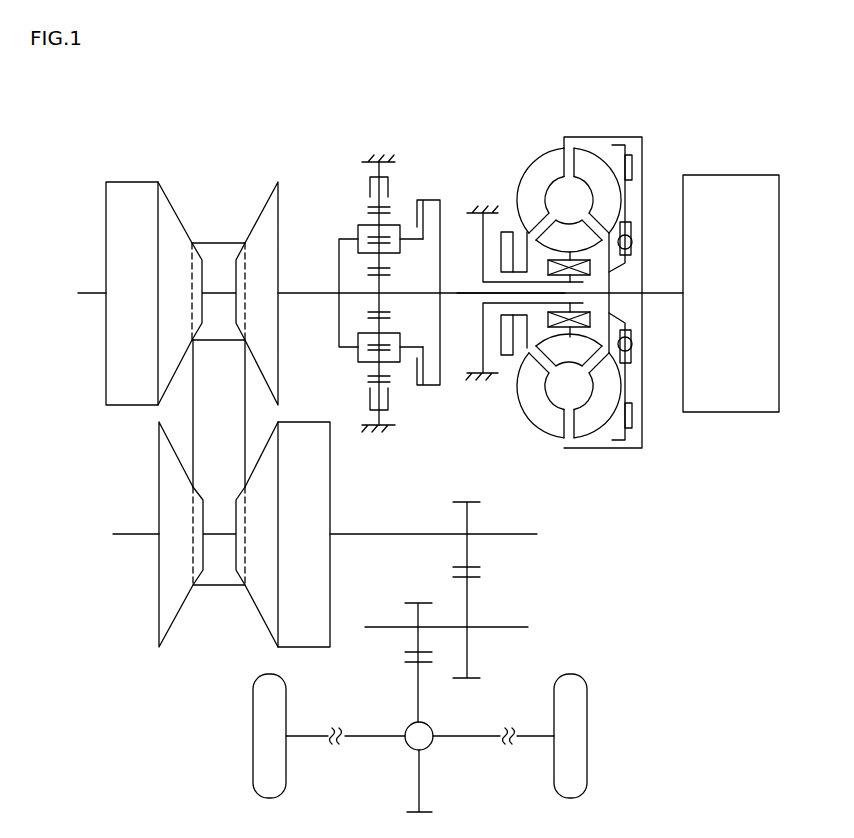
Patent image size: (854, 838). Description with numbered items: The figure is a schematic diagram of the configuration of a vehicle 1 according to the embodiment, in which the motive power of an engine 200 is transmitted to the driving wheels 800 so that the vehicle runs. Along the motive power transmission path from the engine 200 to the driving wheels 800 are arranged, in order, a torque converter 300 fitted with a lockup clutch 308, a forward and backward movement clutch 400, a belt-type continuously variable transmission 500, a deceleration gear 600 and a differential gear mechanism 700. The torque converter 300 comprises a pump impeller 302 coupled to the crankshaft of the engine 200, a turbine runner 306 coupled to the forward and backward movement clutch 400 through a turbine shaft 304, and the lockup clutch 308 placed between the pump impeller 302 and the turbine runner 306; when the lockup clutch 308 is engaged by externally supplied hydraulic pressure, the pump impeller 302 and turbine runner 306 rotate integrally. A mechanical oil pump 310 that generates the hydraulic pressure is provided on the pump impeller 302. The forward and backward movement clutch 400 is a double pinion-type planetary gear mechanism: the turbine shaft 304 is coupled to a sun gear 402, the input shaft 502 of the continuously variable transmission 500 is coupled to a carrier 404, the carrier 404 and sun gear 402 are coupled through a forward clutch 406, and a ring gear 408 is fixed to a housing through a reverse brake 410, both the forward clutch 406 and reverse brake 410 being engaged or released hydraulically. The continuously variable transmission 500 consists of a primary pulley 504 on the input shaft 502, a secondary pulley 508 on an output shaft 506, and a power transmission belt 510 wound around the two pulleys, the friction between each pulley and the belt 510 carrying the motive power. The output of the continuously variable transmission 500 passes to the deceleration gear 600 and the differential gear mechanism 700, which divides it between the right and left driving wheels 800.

The vehicle 1 is at (433, 67).
The engine 200 is at (765, 235).
The torque converter 300 is at (576, 276).
The pump impeller 302 is at (542, 413).
The turbine shaft 304 is at (457, 296).
The turbine runner 306 is at (588, 423).
The lockup clutch 308 is at (632, 167).
The mechanical oil pump 310 is at (509, 232).
The forward and backward movement clutch 400 is at (385, 264).
The sun gear 402 is at (372, 302).
The carrier 404 is at (358, 232).
The forward clutch 406 is at (431, 180).
The ring gear 408 is at (372, 383).
The reverse brake 410 is at (399, 178).
The continuously variable transmission 500 is at (215, 640).
The input shaft 502 is at (311, 290).
The primary pulley 504 is at (117, 234).
The output shaft 506 is at (377, 537).
The secondary pulley 508 is at (317, 482).
The power transmission belt 510 is at (219, 242).
The deceleration gear 600 is at (534, 593).
The differential gear mechanism 700 is at (413, 740).
The driving wheel 800 is at (265, 758).